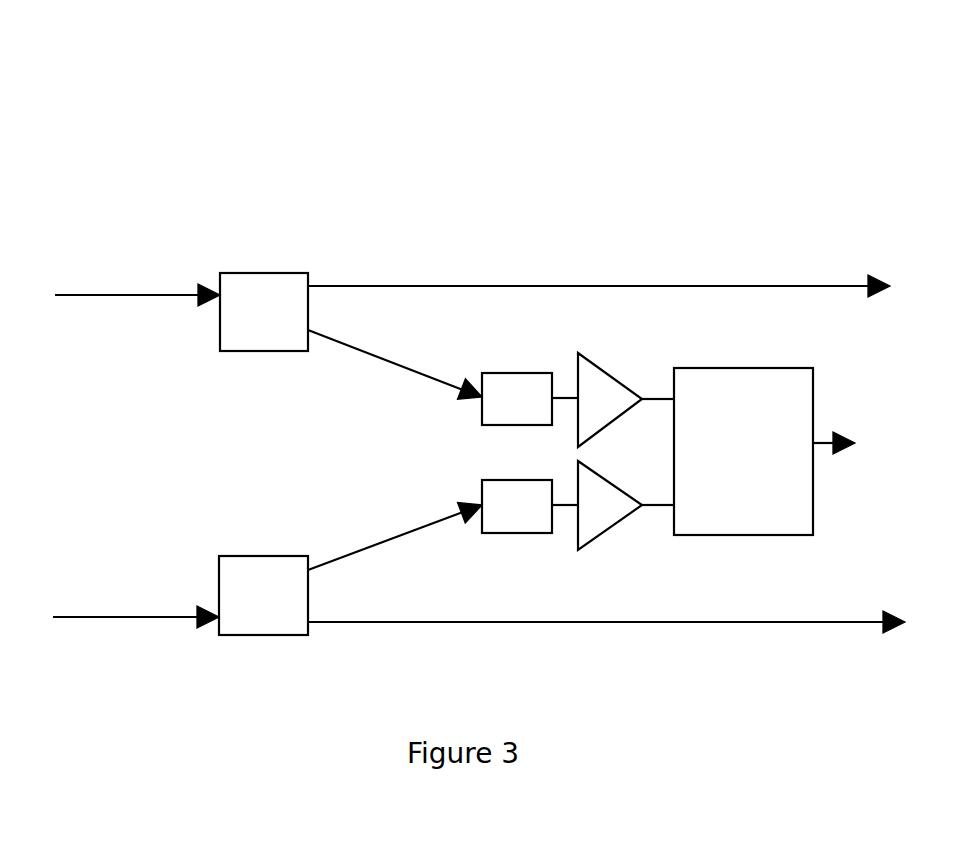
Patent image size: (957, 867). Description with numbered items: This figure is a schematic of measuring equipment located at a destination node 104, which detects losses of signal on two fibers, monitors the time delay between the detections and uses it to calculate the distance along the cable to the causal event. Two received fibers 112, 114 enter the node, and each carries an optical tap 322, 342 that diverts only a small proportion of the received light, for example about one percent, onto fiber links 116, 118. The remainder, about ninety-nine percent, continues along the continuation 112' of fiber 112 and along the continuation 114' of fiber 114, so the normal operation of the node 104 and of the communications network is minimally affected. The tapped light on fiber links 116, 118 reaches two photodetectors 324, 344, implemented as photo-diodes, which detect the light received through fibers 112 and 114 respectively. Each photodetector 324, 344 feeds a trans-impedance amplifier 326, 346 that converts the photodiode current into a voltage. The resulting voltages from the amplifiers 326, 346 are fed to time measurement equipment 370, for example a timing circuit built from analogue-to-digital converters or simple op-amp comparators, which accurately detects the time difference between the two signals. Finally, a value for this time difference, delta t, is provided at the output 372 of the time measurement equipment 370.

The destination node 104 is at (278, 118).
The fiber 112 is at (137, 337).
The continuation of fiber 112' is at (627, 287).
The fiber 114 is at (136, 577).
The continuation of fiber 114' is at (632, 619).
The fiber link 116 is at (356, 352).
The fiber link 118 is at (372, 546).
The optical tap 322 is at (267, 324).
The photodetector 324 is at (491, 386).
The trans-impedance amplifier 326 is at (588, 376).
The optical tap 342 is at (267, 597).
The photodetector 344 is at (505, 521).
The trans-impedance amplifier 346 is at (595, 530).
The time measurement equipment 370 is at (716, 500).
The output 372 is at (855, 431).